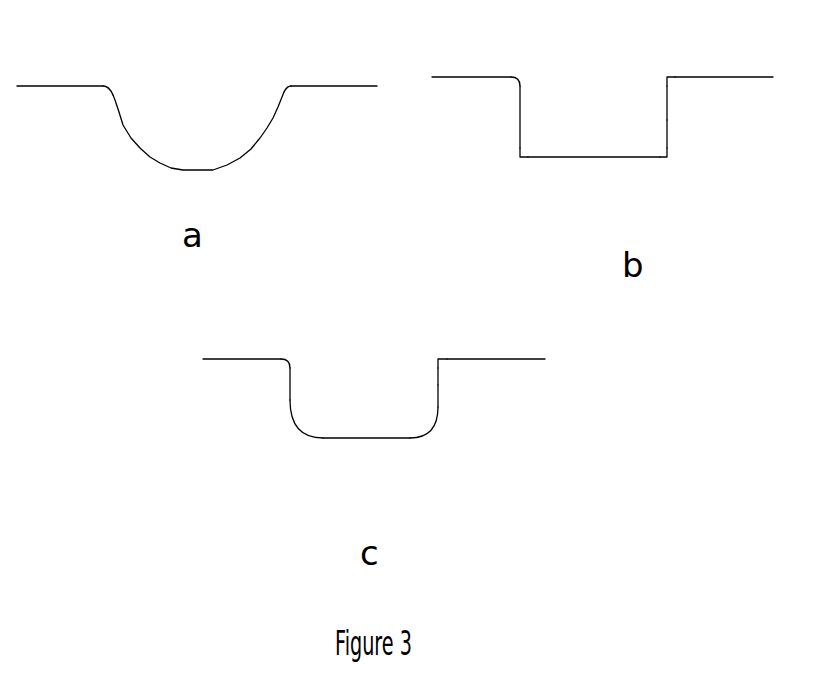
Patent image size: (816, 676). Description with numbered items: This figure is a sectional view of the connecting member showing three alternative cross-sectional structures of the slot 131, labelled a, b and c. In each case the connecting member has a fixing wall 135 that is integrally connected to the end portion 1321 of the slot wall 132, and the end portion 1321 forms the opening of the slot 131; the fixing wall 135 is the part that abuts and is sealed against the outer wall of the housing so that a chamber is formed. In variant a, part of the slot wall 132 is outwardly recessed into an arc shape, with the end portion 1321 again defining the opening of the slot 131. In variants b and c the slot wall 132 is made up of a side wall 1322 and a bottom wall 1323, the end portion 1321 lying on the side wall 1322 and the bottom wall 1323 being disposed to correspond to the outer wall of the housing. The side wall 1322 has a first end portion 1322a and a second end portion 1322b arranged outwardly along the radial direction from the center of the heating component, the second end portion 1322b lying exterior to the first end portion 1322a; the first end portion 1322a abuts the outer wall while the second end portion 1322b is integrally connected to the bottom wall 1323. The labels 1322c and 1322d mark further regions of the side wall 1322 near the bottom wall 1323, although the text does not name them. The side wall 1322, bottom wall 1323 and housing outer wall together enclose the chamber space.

The slot 131 is at (193, 117).
The slot wall 132 is at (158, 163).
The fixing wall 135 is at (68, 86).
The end portion 1321 is at (107, 87).
The side wall 1322 is at (518, 133).
The first end portion 1322a is at (668, 90).
The second end portion 1322b is at (672, 158).
The side wall bottom corner 1322c is at (518, 155).
The third side wall section 1322d is at (668, 143).
The bottom wall 1323 is at (624, 158).